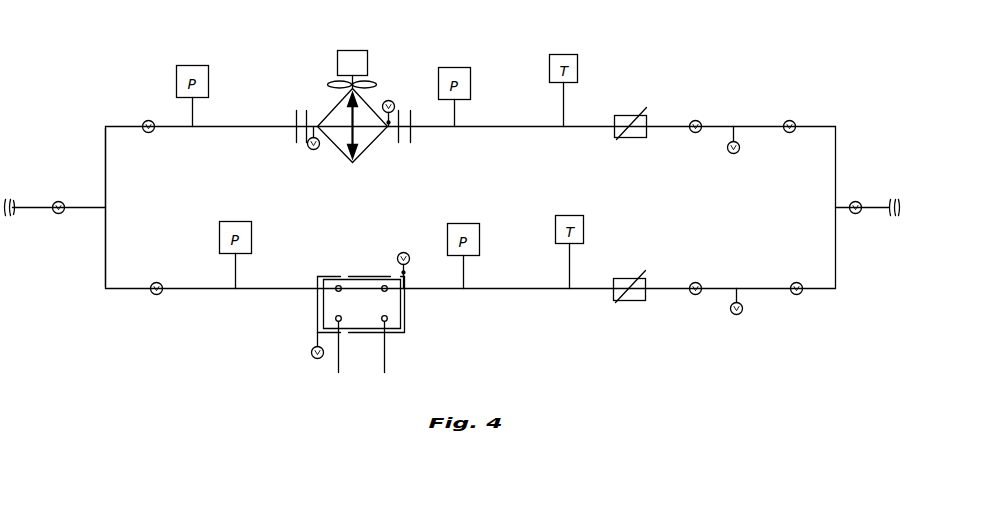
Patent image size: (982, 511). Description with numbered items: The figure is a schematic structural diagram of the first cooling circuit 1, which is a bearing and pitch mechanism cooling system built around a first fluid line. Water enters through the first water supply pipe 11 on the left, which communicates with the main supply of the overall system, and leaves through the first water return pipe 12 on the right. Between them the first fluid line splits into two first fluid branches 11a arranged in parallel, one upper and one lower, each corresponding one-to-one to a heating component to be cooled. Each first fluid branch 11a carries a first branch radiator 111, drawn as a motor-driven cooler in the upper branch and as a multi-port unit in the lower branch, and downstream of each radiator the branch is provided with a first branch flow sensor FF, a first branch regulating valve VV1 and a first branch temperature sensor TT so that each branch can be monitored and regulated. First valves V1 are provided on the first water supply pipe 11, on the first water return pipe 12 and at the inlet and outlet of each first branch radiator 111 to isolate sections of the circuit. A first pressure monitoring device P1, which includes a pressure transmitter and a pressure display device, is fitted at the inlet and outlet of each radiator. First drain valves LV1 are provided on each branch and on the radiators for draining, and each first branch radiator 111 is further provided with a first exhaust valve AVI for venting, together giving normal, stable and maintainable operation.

The first cooling circuit 1 is at (440, 33).
The first water supply pipe 11 is at (26, 207).
The first fluid branch 11a is at (127, 124).
The first water return pipe 12 is at (891, 203).
The first branch radiator 111 is at (335, 146).
The first valve V1 is at (56, 214).
The first pressure monitoring device P1 is at (196, 117).
The first drain valve LV1 is at (306, 144).
The first exhaust valve AVI is at (388, 99).
The first branch temperature sensor TT is at (568, 106).
The first branch flow sensor FF is at (632, 112).
The first branch regulating valve VV1 is at (699, 120).